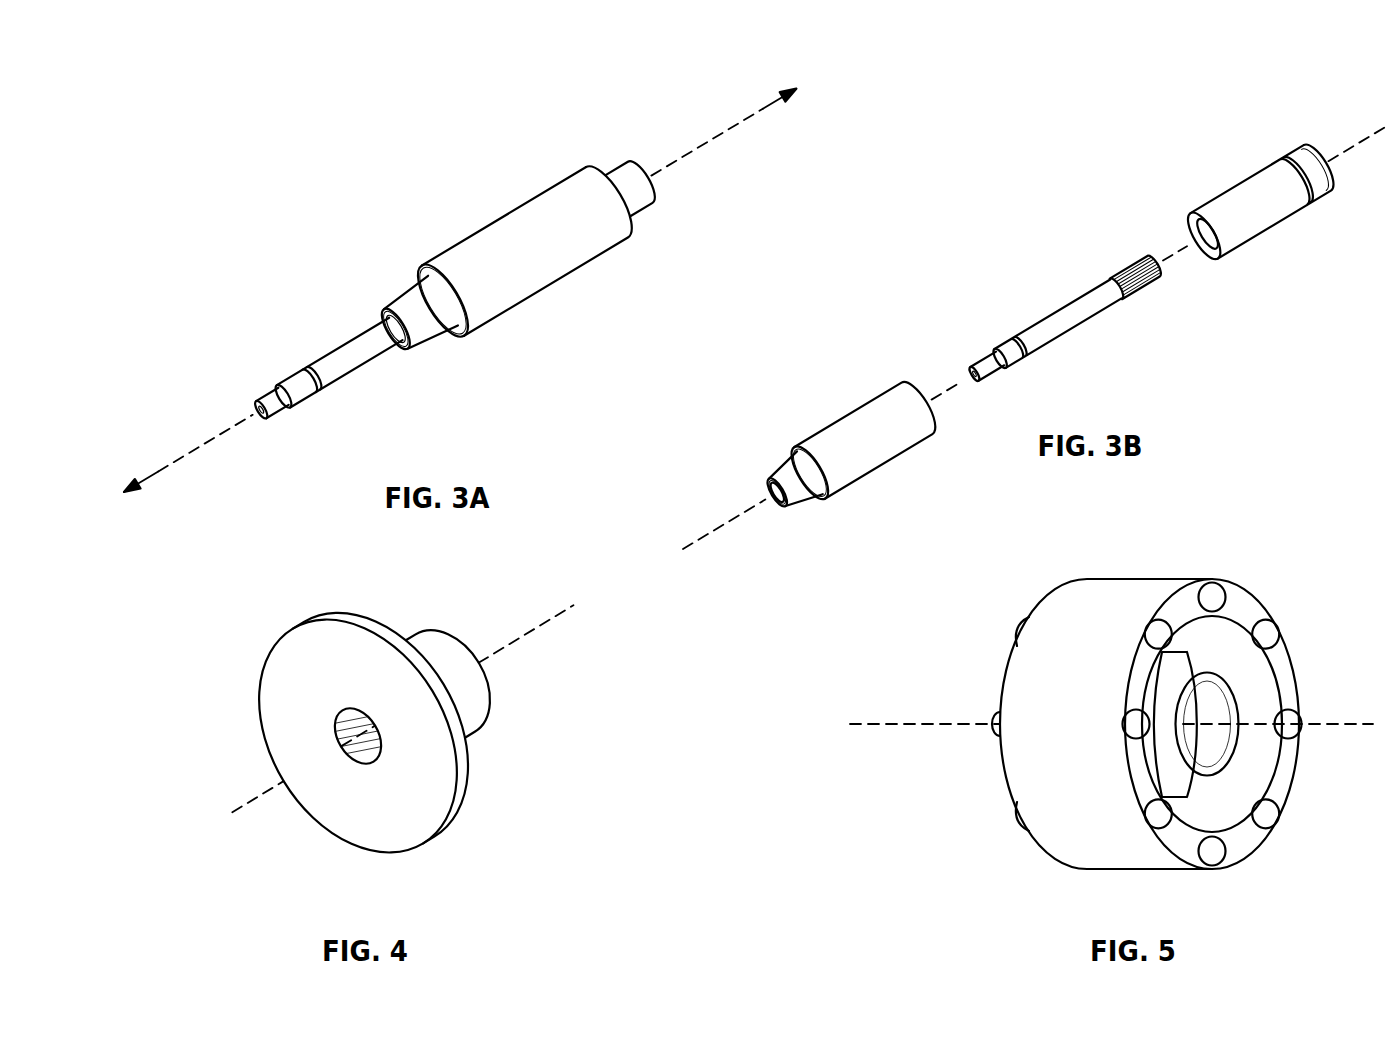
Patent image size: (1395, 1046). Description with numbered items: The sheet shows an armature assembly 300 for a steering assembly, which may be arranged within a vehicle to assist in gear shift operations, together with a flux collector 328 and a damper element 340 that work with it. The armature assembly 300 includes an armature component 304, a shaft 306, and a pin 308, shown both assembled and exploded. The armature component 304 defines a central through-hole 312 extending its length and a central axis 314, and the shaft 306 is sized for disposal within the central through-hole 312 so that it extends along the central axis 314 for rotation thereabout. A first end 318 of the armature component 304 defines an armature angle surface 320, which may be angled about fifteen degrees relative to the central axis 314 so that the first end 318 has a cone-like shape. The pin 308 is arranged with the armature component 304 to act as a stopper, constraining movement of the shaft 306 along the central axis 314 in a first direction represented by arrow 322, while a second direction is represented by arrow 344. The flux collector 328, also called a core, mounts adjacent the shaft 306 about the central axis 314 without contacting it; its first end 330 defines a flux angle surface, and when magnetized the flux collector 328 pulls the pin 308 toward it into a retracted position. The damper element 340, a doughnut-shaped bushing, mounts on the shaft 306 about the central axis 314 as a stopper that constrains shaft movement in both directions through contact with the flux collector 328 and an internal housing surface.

In FIG. 3A, the armature assembly 300 is at (460, 291).
In FIG. 3A, the armature component 304 is at (525, 251).
In FIG. 3B, the armature component 304 is at (864, 441).
In FIG. 3A, the shaft 306 is at (326, 370).
In FIG. 3B, the shaft 306 is at (1065, 320).
In FIG. 3A, the pin 308 is at (633, 186).
In FIG. 3B, the pin 308 is at (1261, 202).
In FIG. 3A, the central through-hole 312 is at (396, 329).
In FIG. 3B, the central through-hole 312 is at (777, 492).
In FIG. 3A, the central axis 314 is at (460, 290).
In FIG. 3B, the central axis 314 is at (1034, 338).
In FIG. 4, the central axis 314 is at (372, 588).
In FIG. 3A, the first end 318 is at (396, 329).
In FIG. 3B, the first end 318 is at (777, 492).
In FIG. 3A, the armature angle surface 320 is at (419, 315).
In FIG. 3B, the armature angle surface 320 is at (793, 482).
In FIG. 3A, the arrow 322 is at (141, 482).
In FIG. 3A, the arrow 344 is at (779, 98).
In FIG. 4, the flux collector 328 is at (402, 709).
In FIG. 4, the first end 330 is at (457, 676).
In FIG. 5, the damper element 340 is at (1111, 700).